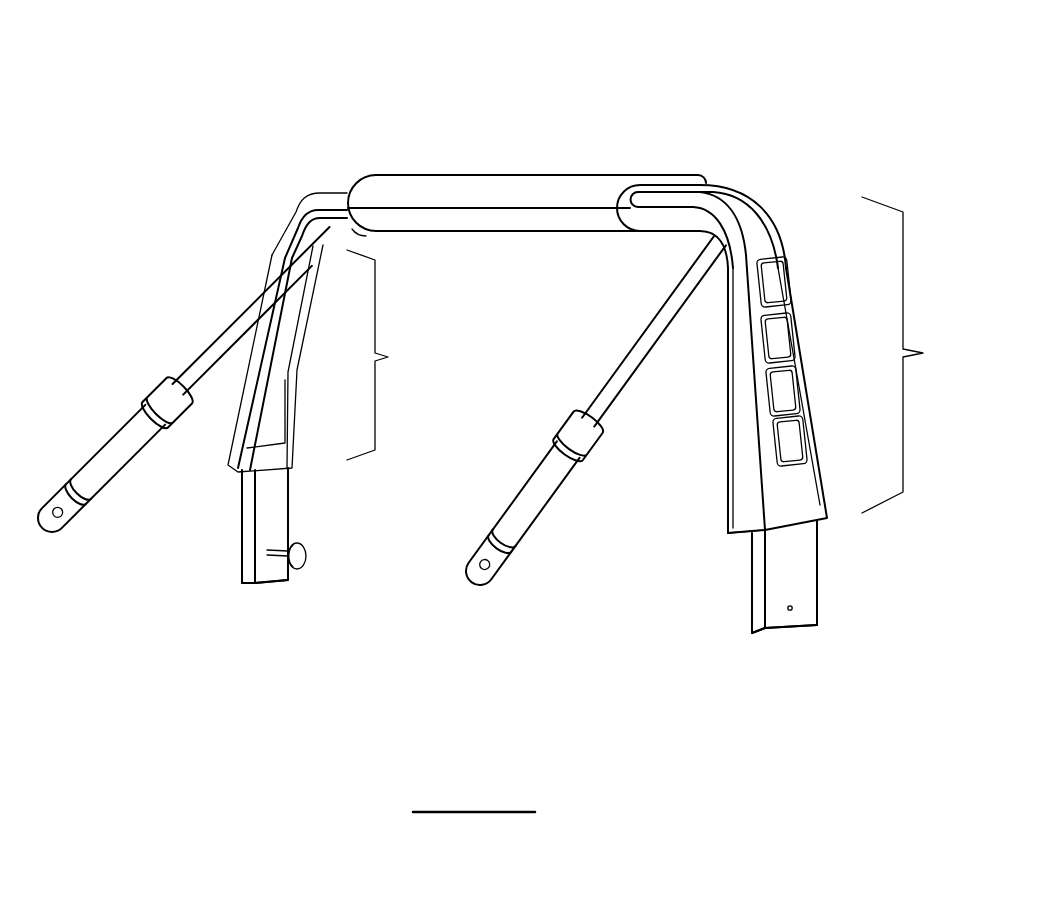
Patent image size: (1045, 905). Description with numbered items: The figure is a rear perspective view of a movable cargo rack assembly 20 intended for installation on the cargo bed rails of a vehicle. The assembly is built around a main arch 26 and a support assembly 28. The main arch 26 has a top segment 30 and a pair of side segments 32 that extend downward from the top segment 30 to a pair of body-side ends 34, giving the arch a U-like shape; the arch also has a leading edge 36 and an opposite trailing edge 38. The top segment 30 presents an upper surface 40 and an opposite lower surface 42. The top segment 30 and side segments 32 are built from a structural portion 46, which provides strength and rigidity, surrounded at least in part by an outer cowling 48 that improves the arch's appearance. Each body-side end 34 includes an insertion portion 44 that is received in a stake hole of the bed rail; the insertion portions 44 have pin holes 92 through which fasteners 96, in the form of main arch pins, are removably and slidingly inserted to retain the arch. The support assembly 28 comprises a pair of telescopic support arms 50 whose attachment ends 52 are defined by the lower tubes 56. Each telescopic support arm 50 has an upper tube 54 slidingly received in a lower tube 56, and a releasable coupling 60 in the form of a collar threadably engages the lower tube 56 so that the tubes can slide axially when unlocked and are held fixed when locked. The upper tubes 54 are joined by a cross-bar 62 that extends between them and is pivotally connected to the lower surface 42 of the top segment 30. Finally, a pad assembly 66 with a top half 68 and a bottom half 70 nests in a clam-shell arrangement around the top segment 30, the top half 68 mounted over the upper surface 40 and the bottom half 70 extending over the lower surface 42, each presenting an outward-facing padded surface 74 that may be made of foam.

The movable cargo rack assembly 20 is at (205, 86).
The main arch 26 is at (490, 113).
The support assembly 28 is at (600, 535).
The top segment 30 is at (669, 189).
The side segments 32 is at (649, 355).
The body-side ends 34 is at (275, 593).
The leading edge 36 is at (773, 204).
The trailing edge 38 is at (727, 380).
The upper surface 40 is at (316, 191).
The lower surface 42 is at (668, 209).
The insertion portion 44 is at (248, 553).
The structural portion 46 is at (273, 431).
The outer cowling 48 is at (810, 508).
The telescopic support arms 50 is at (190, 320).
The attachment ends 52 is at (60, 503).
The upper tube 54 is at (216, 340).
The lower tube 56 is at (118, 440).
The releasable coupling 60 is at (158, 394).
The cross-bar 62 is at (349, 228).
The pad assembly 66 is at (360, 156).
The top half 68 is at (587, 177).
The bottom half 70 is at (479, 228).
The padded surface 74 is at (405, 173).
The pin holes 92 is at (795, 607).
The fasteners 96 is at (310, 553).